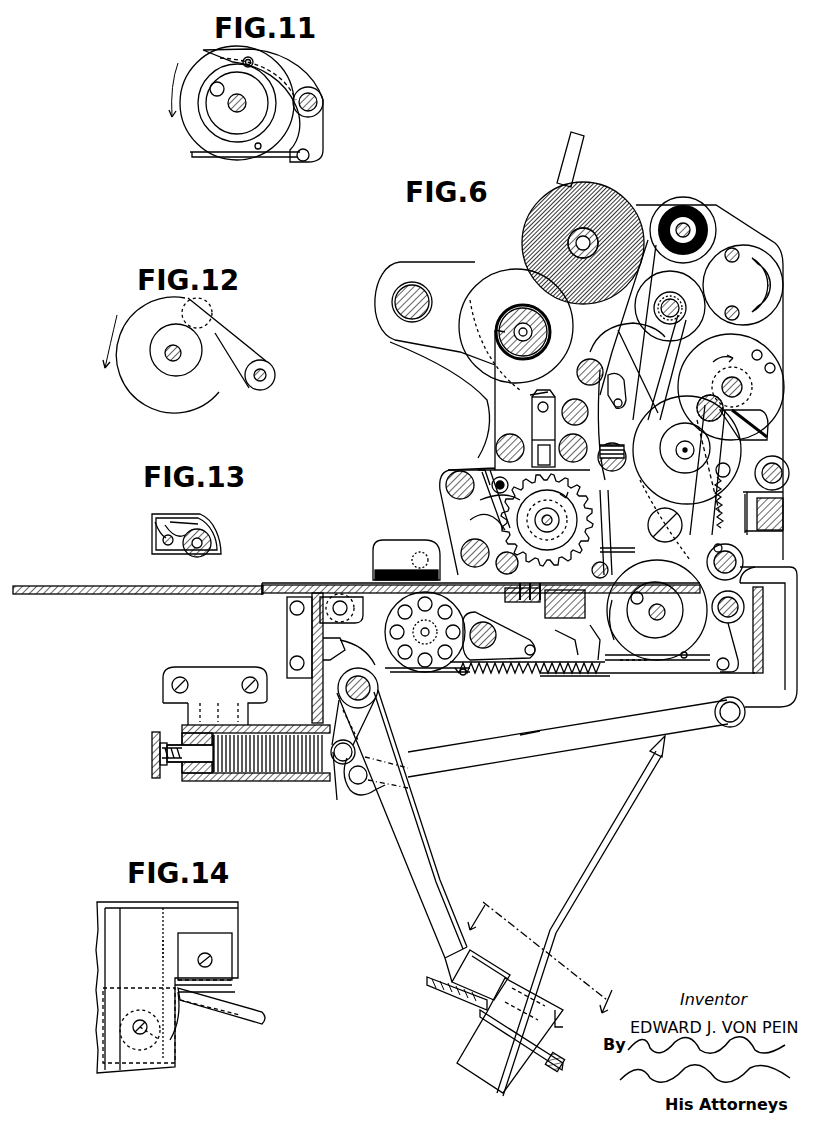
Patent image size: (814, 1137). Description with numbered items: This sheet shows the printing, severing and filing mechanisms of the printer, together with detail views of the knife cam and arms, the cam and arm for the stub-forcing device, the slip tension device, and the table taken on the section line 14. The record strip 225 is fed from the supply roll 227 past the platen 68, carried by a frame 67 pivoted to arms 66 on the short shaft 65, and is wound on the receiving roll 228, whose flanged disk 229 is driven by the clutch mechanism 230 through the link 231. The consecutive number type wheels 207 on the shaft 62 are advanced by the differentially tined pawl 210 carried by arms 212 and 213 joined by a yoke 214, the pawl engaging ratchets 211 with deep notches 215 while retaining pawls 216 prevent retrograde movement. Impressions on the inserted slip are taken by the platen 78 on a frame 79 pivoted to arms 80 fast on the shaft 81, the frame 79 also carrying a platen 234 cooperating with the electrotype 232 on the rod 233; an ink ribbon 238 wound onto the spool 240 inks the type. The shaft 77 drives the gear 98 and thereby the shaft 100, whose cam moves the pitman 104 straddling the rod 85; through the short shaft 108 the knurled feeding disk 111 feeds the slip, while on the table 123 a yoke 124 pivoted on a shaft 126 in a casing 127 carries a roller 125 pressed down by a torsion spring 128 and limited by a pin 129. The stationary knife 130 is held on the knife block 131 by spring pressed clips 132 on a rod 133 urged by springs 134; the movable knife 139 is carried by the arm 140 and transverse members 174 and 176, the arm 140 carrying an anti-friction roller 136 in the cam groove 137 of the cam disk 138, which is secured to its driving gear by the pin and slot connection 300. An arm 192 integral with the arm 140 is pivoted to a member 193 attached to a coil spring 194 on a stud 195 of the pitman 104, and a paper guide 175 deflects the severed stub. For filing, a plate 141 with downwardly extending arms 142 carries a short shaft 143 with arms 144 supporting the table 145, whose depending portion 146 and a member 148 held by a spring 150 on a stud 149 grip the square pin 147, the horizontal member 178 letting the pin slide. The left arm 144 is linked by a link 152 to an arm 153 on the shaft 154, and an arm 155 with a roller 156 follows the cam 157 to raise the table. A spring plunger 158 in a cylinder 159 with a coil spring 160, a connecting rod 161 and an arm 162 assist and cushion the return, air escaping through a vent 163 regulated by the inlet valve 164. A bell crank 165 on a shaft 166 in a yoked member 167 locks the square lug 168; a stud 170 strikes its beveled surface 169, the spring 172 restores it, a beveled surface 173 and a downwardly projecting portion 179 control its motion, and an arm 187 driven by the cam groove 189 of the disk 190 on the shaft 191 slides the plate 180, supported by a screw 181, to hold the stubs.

In FIG. 6, the section line 14— 14 is at (547, 964).
In FIG. 6, the shaft 62 is at (552, 520).
In FIG. 6, the short shaft 65 is at (538, 408).
In FIG. 6, the arms 66 is at (600, 396).
In FIG. 6, the frame 67 is at (536, 418).
In FIG. 6, the platen 68 is at (538, 445).
In FIG. 6, the shaft 77 is at (733, 377).
In FIG. 6, the platen 78 is at (535, 590).
In FIG. 6, the frame 79 is at (488, 660).
In FIG. 6, the arms 80 is at (487, 676).
In FIG. 6, the shaft 81 is at (463, 675).
In FIG. 11, the rod 85 is at (318, 100).
In FIG. 6, the rod 85 is at (740, 590).
In FIG. 6, the gear 98 is at (662, 455).
In FIG. 11, the shaft 100 is at (230, 106).
In FIG. 6, the shaft 100 is at (662, 604).
In FIG. 6, the pitman 104 is at (648, 730).
In FIG. 6, the short shaft 108 is at (340, 602).
In FIG. 6, the knurled feeding disk 111 is at (390, 600).
In FIG. 6, the table 123 is at (90, 596).
In FIG. 13, the yoke 124 is at (205, 528).
In FIG. 13, the roller 125 is at (212, 545).
In FIG. 6, the roller 125 is at (417, 560).
In FIG. 13, the shaft 126 is at (167, 546).
In FIG. 13, the casing 127 is at (190, 516).
In FIG. 6, the casing 127 is at (385, 545).
In FIG. 13, the torsion spring 128 is at (153, 527).
In FIG. 13, the pin 129 is at (186, 522).
In FIG. 6, the stationary knife 130 is at (636, 606).
In FIG. 6, the knife block 131 is at (616, 622).
In FIG. 6, the spring pressed clips 132 is at (563, 668).
In FIG. 6, the rod 133 is at (596, 668).
In FIG. 6, the springs 134 is at (638, 668).
In FIG. 11, the anti-friction roller 136 is at (255, 62).
In FIG. 6, the anti-friction roller 136 is at (712, 545).
In FIG. 11, the cam groove 137 is at (258, 150).
In FIG. 6, the cam groove 137 is at (686, 657).
In FIG. 11, the cam disk 138 is at (240, 134).
In FIG. 6, the cam disk 138 is at (665, 660).
In FIG. 6, the movable knife 139 is at (598, 530).
In FIG. 11, the arm 140 is at (295, 75).
In FIG. 6, the arm 140 is at (712, 530).
In FIG. 6, the plate 141 is at (312, 628).
In FIG. 6, the downwardly extending arms 142 is at (322, 648).
In FIG. 6, the short shaft 143 is at (320, 672).
In FIG. 6, the arms 144 is at (400, 840).
In FIG. 14, the table 145 is at (225, 922).
In FIG. 6, the table 145 is at (490, 950).
In FIG. 14, the depending portion 146 is at (232, 985).
In FIG. 6, the depending portion 146 is at (540, 1035).
In FIG. 14, the square pin 147 is at (183, 997).
In FIG. 6, the square pin 147 is at (598, 862).
In FIG. 14, the member 148 is at (212, 1012).
In FIG. 6, the member 148 is at (550, 1068).
In FIG. 14, the stud 149 is at (160, 1040).
In FIG. 14, the spring 150 is at (163, 947).
In FIG. 6, the link 152 is at (575, 755).
In FIG. 6, the arm 153 is at (787, 690).
In FIG. 6, the shaft 154 is at (718, 560).
In FIG. 6, the arm 155 is at (695, 497).
In FIG. 6, the anti-friction roller 156 is at (722, 368).
In FIG. 6, the cam 157 is at (712, 330).
In FIG. 6, the spring plunger 158 is at (258, 782).
In FIG. 6, the cylinder 159 is at (198, 782).
In FIG. 6, the coil spring 160 is at (292, 782).
In FIG. 6, the connecting rod 161 is at (338, 760).
In FIG. 6, the arm 162 is at (358, 730).
In FIG. 6, the vent 163 is at (178, 775).
In FIG. 6, the inlet valve 164 is at (152, 760).
In FIG. 6, the bell crank 165 is at (708, 415).
In FIG. 12, the shaft 166 is at (273, 370).
In FIG. 6, the shaft 166 is at (758, 476).
In FIG. 6, the yoked member 167 is at (760, 531).
In FIG. 6, the square lug 168 is at (720, 466).
In FIG. 6, the beveled surface 169 is at (768, 364).
In FIG. 6, the stud 170 is at (758, 350).
In FIG. 6, the spring 172 is at (712, 528).
In FIG. 6, the beveled surface 173 is at (690, 478).
In FIG. 6, the transverse member 174 is at (622, 545).
In FIG. 6, the paper guide 175 is at (742, 718).
In FIG. 6, the transverse member 176 is at (764, 605).
In FIG. 14, the horizontal member 178 is at (232, 994).
In FIG. 6, the horizontal member 178 is at (510, 1090).
In FIG. 6, the downwardly projecting portion 179 is at (714, 512).
In FIG. 6, the plate 180 is at (548, 680).
In FIG. 6, the screw 181 is at (585, 428).
In FIG. 12, the arm 187 is at (242, 345).
In FIG. 6, the arm 187 is at (720, 445).
In FIG. 12, the cam groove 189 is at (170, 383).
In FIG. 12, the disk 190 is at (130, 386).
In FIG. 6, the disk 190 is at (655, 412).
In FIG. 12, the shaft 191 is at (184, 362).
In FIG. 6, the shaft 191 is at (678, 455).
In FIG. 11, the arm 192 is at (312, 135).
In FIG. 6, the arm 192 is at (748, 630).
In FIG. 11, the member 193 is at (200, 155).
In FIG. 6, the member 193 is at (692, 648).
In FIG. 6, the coil spring 194 is at (512, 676).
In FIG. 6, the stud 195 is at (418, 672).
In FIG. 6, the consecutive number type wheels 207 is at (510, 448).
In FIG. 6, the differentially tined pawl 210 is at (470, 500).
In FIG. 6, the ratchets 211 is at (490, 540).
In FIG. 6, the arm 212 is at (545, 546).
In FIG. 6, the arm 213 is at (475, 515).
In FIG. 6, the yoke 214 is at (478, 468).
In FIG. 6, the deep notches 215 is at (566, 498).
In FIG. 6, the retaining pawls 216 is at (610, 455).
In FIG. 6, the record strip 225 is at (500, 402).
In FIG. 6, the supply roll 227 is at (602, 190).
In FIG. 6, the receiving roll 228 is at (515, 305).
In FIG. 6, the flanged disk 229 is at (480, 300).
In FIG. 6, the clutch mechanism 230 is at (475, 340).
In FIG. 6, the link 231 is at (633, 337).
In FIG. 6, the electrotype 232 is at (455, 572).
In FIG. 6, the rod 233 is at (495, 555).
In FIG. 6, the platen 234 is at (505, 596).
In FIG. 6, the ink ribbon 238 is at (700, 212).
In FIG. 6, the spool 240 is at (580, 158).
In FIG. 11, the pin and slot connection 300 is at (211, 84).